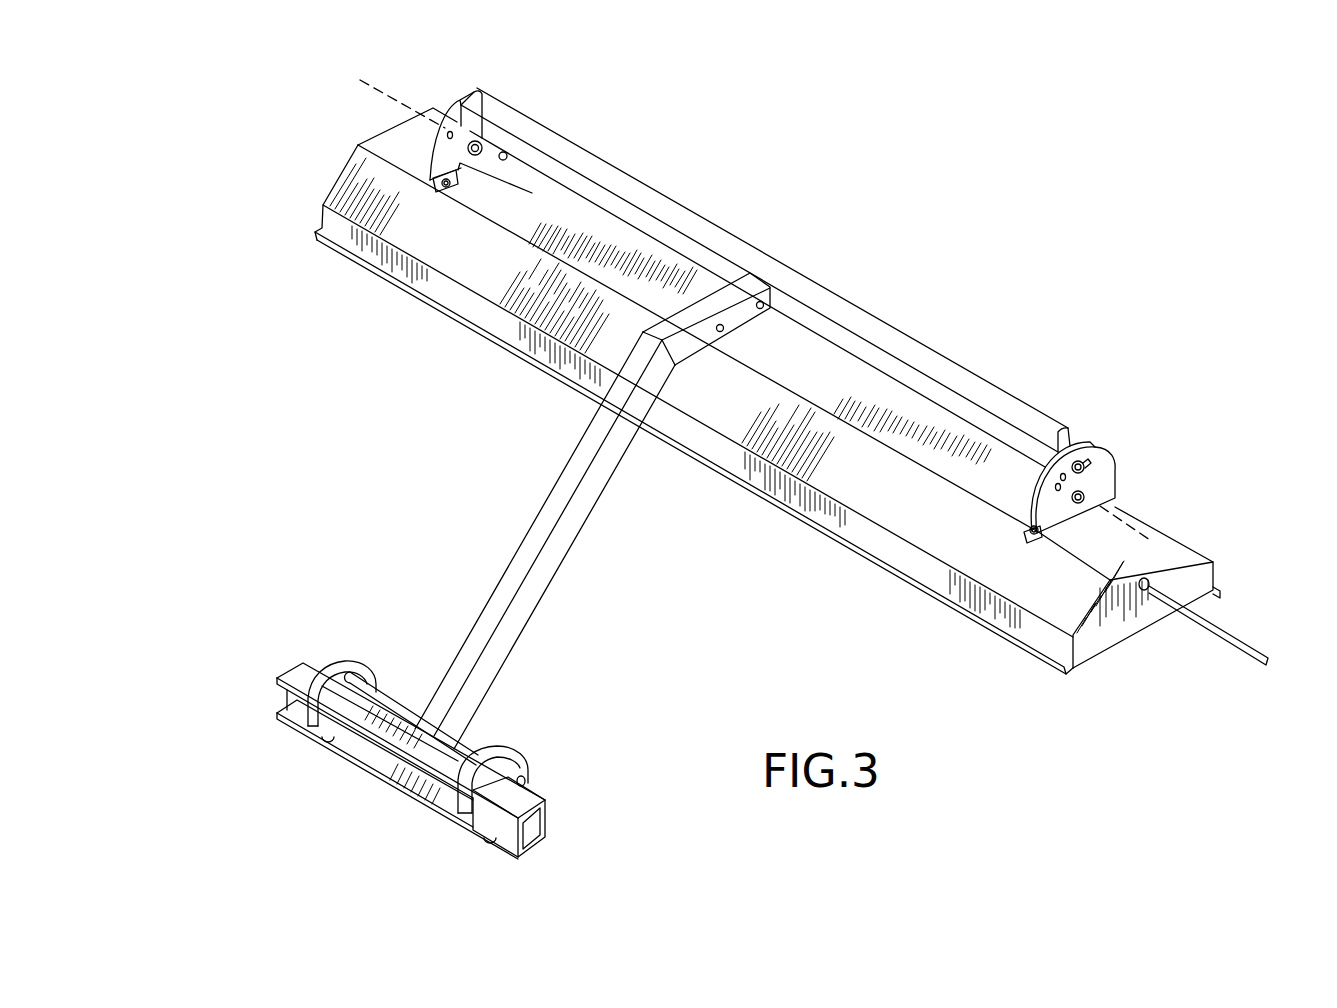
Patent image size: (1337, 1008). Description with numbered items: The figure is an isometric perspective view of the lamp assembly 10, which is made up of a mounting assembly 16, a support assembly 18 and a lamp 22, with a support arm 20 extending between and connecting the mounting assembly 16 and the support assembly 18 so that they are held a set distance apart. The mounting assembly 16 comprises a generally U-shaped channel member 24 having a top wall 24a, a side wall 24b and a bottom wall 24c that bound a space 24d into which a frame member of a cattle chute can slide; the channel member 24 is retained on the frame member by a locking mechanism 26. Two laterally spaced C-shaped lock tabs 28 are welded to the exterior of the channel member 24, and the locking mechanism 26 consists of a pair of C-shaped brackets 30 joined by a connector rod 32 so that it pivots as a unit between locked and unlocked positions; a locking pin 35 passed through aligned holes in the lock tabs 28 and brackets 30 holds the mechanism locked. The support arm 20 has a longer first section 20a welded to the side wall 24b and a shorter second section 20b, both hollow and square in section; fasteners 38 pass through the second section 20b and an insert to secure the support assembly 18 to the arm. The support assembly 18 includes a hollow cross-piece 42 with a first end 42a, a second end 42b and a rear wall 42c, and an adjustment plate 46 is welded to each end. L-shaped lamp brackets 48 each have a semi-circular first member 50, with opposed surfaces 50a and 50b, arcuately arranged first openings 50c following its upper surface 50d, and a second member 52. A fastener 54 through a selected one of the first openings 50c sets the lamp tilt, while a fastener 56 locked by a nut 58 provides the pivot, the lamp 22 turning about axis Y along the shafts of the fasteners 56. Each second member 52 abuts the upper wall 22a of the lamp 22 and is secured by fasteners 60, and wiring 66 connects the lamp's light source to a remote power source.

The lamp assembly 10 is at (952, 272).
The mounting assembly 16 is at (375, 792).
The support assembly 18 is at (1075, 400).
The support arm 20 is at (510, 548).
The first section 20a is at (560, 490).
The second section 20b is at (705, 297).
The lamp 22 is at (1205, 553).
The upper wall 22a is at (853, 390).
The channel member 24 is at (290, 657).
The top wall 24a is at (297, 670).
The side wall 24b is at (548, 818).
The bottom wall 24c is at (295, 708).
The space 24d is at (355, 742).
The locking mechanism 26 is at (518, 745).
The lock tab 28 is at (455, 713).
The bracket 30 is at (333, 655).
The connector rod 32 is at (407, 708).
The locking pin 35 is at (525, 782).
The fastener 38 is at (722, 330).
The cross-piece 42 is at (915, 345).
The first end 42a is at (490, 100).
The second end 42b is at (1062, 445).
The rear wall 42c is at (807, 316).
The adjustment plate 46 is at (455, 100).
The lamp bracket 48 is at (750, 326).
The first member 50 is at (750, 326).
The first surface 50a is at (447, 157).
The second surface 50b is at (1058, 510).
The first openings 50c is at (1050, 470).
The upper surface 50d is at (432, 140).
The second member 52 is at (477, 172).
The fastener 54 is at (1090, 468).
The fastener 56 is at (503, 152).
The nut 58 is at (478, 142).
The fastener 60 is at (472, 186).
The wiring 66 is at (1245, 640).
The axis Y is at (360, 82).